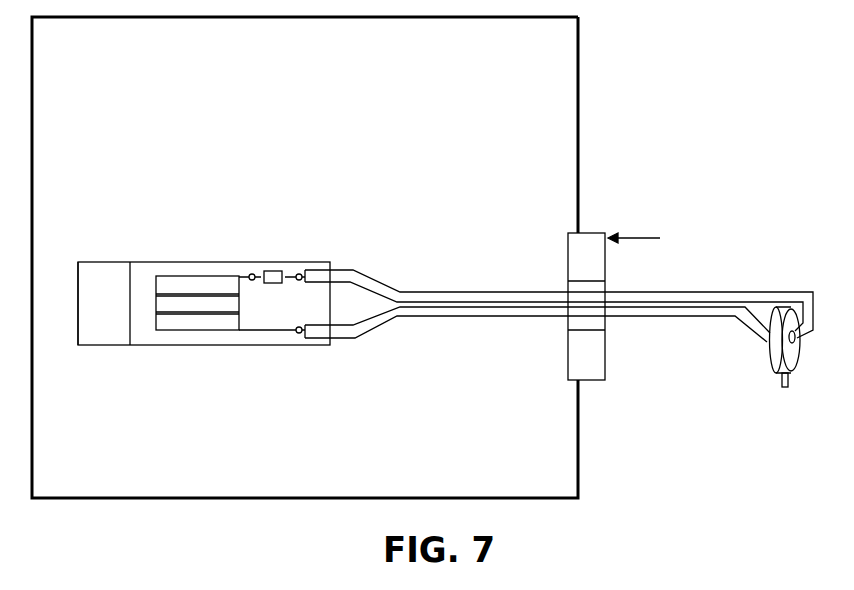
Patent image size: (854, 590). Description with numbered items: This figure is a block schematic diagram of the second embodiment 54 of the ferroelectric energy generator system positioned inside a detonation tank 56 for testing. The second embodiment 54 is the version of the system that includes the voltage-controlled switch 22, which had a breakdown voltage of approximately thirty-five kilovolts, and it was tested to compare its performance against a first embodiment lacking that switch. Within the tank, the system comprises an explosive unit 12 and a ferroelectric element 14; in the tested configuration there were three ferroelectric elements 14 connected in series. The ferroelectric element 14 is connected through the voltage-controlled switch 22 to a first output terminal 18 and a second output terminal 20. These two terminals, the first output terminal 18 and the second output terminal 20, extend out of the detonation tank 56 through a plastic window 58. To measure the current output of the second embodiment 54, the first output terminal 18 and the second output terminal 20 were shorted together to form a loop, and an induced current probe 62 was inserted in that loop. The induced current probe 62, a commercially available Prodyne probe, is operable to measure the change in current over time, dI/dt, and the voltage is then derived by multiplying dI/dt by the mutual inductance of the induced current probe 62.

The explosive unit 12 is at (95, 270).
The ferroelectric element 14 is at (193, 277).
The first output terminal 18 is at (370, 281).
The second output terminal 20 is at (375, 327).
The voltage-controlled switch 22 is at (272, 270).
The second embodiment 54 is at (150, 349).
The detonation tank 56 is at (586, 82).
The plastic window 58 is at (592, 236).
The induced current probe 62 is at (798, 371).